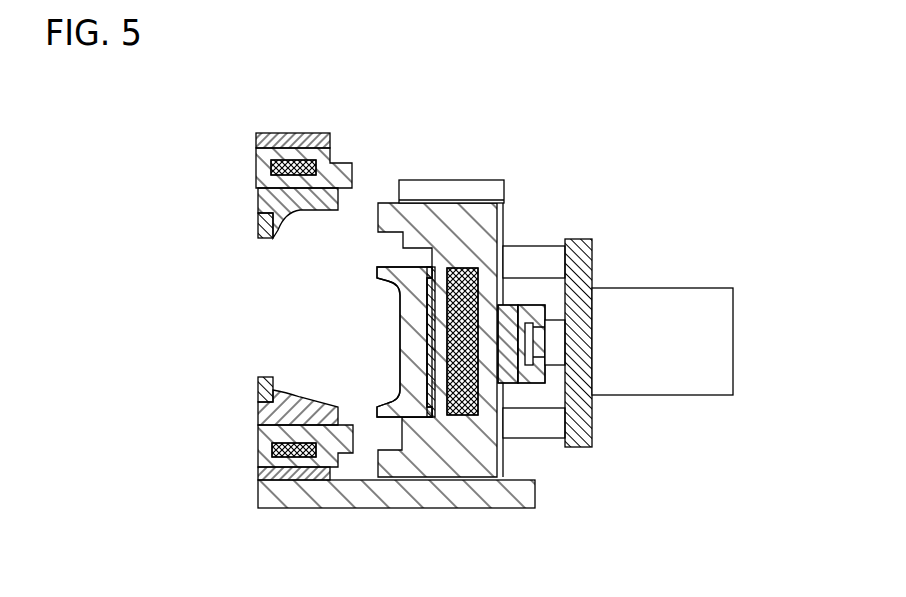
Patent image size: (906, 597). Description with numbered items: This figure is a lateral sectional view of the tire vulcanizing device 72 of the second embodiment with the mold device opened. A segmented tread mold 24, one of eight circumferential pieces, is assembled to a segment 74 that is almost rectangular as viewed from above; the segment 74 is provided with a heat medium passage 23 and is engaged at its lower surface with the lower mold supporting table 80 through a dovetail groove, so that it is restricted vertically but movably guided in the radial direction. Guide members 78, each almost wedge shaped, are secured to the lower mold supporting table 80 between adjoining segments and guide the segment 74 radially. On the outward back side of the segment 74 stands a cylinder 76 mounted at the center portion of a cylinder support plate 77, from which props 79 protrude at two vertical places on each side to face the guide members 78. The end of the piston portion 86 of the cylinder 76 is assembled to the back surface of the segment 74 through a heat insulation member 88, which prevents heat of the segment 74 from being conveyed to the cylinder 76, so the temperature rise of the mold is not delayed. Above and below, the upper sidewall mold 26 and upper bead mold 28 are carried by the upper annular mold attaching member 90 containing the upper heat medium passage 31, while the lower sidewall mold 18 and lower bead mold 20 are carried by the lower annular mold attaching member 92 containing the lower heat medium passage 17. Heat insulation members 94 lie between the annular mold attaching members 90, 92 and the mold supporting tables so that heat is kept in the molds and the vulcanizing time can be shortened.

The lower heat medium passage 17 is at (302, 452).
The lower sidewall mold 18 is at (298, 403).
The lower bead mold 20 is at (258, 382).
The heat medium passage 23 is at (447, 342).
The segmented tread mold 24 is at (410, 322).
The upper sidewall mold 26 is at (300, 212).
The upper bead mold 28 is at (258, 228).
The upper heat medium passage 31 is at (316, 166).
The tire vulcanizing device 72 is at (600, 158).
The segment 74 is at (477, 220).
The cylinder 76 is at (700, 290).
The cylinder support plate 77 is at (590, 448).
The guide member 78 is at (483, 183).
The prop 79 is at (530, 246).
The lower mold supporting table 80 is at (272, 492).
The piston portion 86 is at (537, 330).
The heat insulation member 88 is at (520, 386).
The upper annular mold attaching member 90 is at (256, 170).
The lower annular mold attaching member 92 is at (258, 443).
The heat insulation member 94 is at (256, 138).